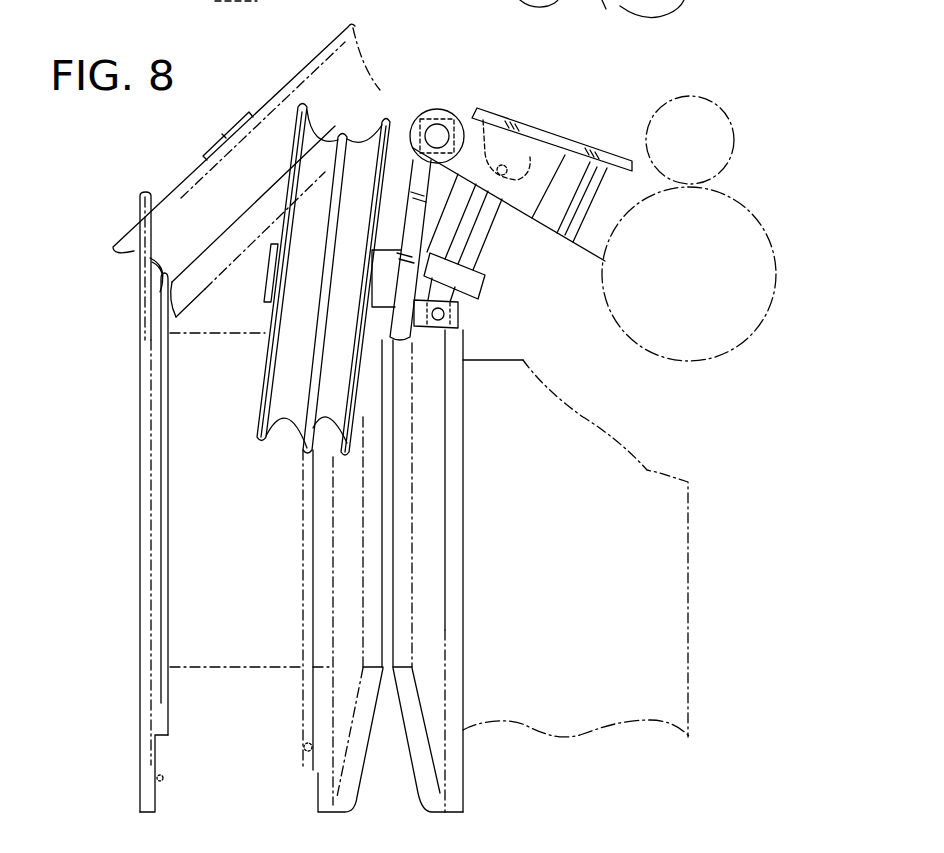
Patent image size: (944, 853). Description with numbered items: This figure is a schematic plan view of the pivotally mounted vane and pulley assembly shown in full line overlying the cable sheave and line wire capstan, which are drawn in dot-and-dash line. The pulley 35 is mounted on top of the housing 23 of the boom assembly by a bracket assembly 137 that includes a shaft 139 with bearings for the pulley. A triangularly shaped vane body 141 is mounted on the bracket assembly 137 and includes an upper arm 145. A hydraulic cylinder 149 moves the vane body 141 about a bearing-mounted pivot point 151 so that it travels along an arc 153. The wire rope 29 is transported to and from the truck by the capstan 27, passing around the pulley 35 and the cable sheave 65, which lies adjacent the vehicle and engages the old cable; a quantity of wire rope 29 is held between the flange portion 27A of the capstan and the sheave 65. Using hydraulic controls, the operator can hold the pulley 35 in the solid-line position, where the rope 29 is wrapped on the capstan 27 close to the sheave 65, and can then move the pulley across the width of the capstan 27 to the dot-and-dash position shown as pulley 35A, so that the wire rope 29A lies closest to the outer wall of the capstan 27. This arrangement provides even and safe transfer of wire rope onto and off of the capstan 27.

The housing 23 is at (753, 207).
The capstan 27 is at (141, 702).
The flange portion 27A is at (141, 757).
The wire rope 29 is at (303, 596).
The wire rope 29A is at (147, 274).
The pulley 35 is at (196, 307).
The pulley 35A is at (180, 187).
The cable sheave 65 is at (317, 773).
The bracket assembly 137 is at (592, 165).
The shaft 139 is at (270, 280).
The vane body 141 is at (400, 133).
The upper arm 145 is at (545, 155).
The hydraulic cylinder 149 is at (484, 258).
The pivot point 151 is at (437, 133).
The arc 153 is at (390, 337).